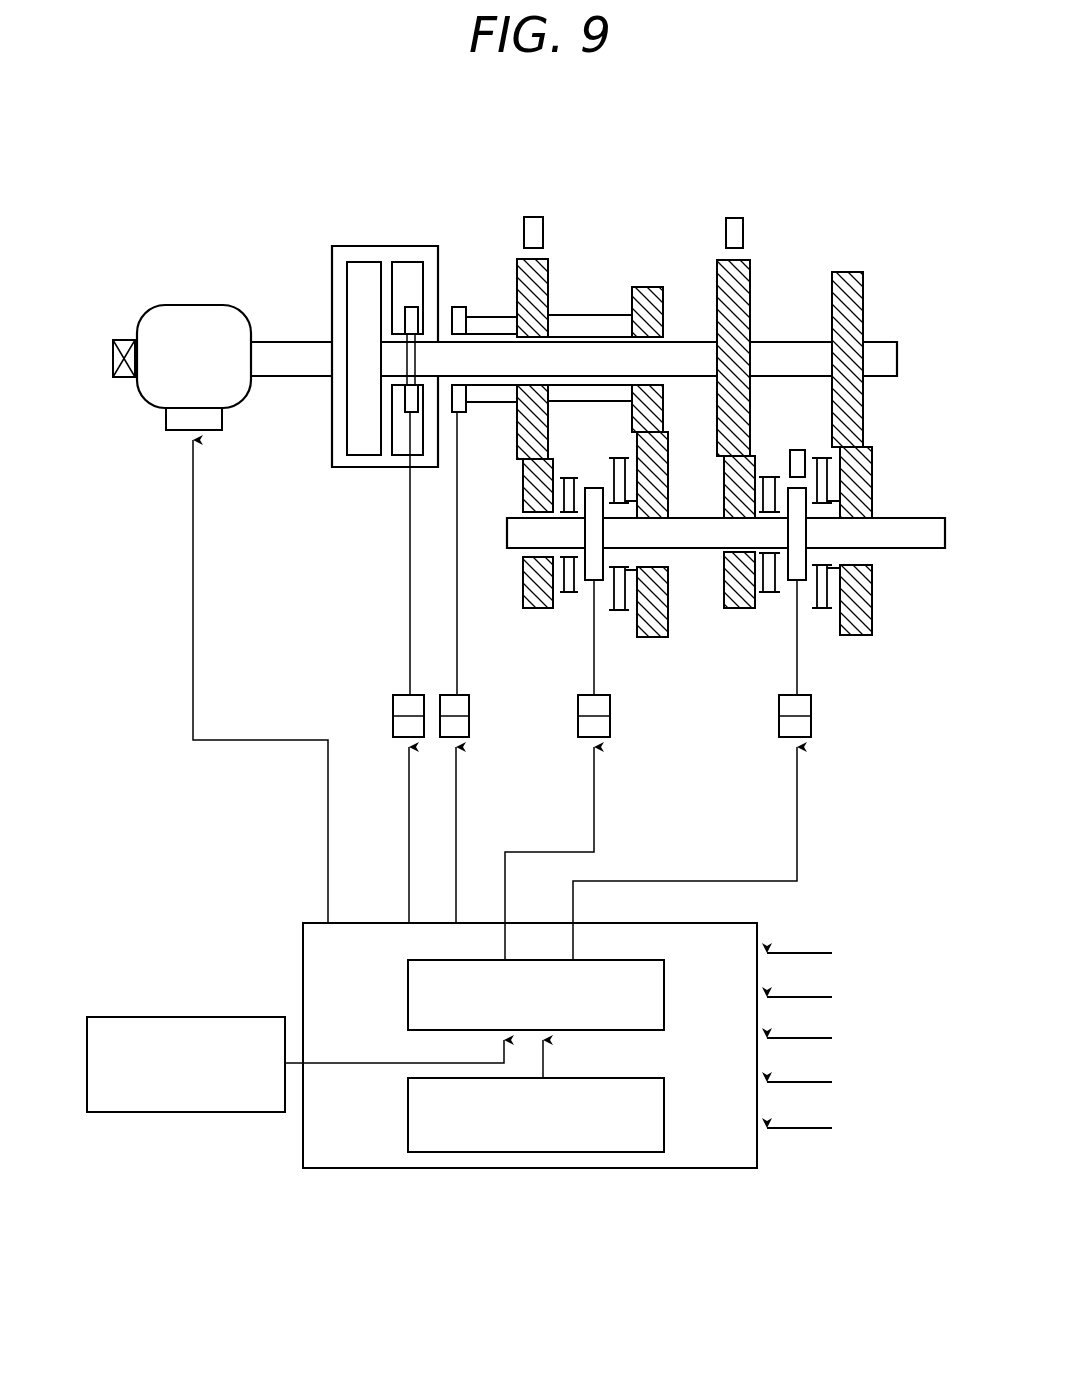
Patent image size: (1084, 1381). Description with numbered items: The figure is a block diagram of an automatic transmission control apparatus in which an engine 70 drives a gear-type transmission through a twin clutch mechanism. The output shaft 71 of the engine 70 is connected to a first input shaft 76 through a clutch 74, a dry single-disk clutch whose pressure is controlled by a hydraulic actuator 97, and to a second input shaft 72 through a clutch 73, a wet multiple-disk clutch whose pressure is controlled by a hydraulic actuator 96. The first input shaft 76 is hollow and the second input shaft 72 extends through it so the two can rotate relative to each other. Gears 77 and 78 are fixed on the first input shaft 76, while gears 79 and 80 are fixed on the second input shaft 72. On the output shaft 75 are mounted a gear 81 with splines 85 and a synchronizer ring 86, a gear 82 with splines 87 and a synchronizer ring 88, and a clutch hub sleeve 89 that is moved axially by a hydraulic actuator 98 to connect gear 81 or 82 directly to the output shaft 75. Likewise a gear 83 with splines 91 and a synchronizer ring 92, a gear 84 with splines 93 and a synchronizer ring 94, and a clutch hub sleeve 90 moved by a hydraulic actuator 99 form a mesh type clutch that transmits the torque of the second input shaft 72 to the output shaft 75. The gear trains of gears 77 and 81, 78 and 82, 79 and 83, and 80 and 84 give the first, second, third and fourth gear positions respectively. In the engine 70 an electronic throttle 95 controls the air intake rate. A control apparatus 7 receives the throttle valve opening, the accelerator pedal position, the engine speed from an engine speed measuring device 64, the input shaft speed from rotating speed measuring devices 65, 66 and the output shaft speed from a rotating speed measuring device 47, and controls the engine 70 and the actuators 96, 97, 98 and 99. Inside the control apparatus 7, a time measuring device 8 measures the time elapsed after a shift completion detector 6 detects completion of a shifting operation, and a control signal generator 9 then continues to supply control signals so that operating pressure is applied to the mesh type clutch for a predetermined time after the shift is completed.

The shift completion detector 6 is at (200, 1017).
The control apparatus 7 is at (706, 1168).
The time measuring device 8 is at (664, 1115).
The control signal generator 9 is at (664, 995).
The rotating speed measuring device 47 is at (797, 450).
The engine speed measuring device 64 is at (120, 378).
The rotating speed measuring device 65 is at (533, 217).
The rotating speed measuring device 66 is at (735, 218).
The engine 70 is at (200, 305).
The output shaft 71 is at (338, 262).
The second input shaft 72 is at (880, 360).
The clutch 73 is at (412, 307).
The clutch 74 is at (458, 307).
The output shaft 75 is at (915, 518).
The first input shaft 76 is at (595, 315).
The gear 77 is at (549, 266).
The gear 78 is at (646, 287).
The gear 79 is at (750, 276).
The gear 80 is at (863, 290).
The gear 81 is at (533, 609).
The gear 82 is at (655, 638).
The gear 83 is at (735, 609).
The gear 84 is at (856, 636).
The splines 85 is at (568, 593).
The synchronizer ring 86 is at (569, 478).
The splines 87 is at (618, 458).
The synchronizer ring 88 is at (618, 611).
The clutch hub sleeve 89 is at (592, 488).
The clutch hub sleeve 90 is at (788, 530).
The splines 91 is at (770, 593).
The synchronizer ring 92 is at (769, 477).
The splines 93 is at (822, 458).
The synchronizer ring 94 is at (822, 609).
The electronic throttle 95 is at (208, 431).
The hydraulic actuator 96 is at (393, 725).
The hydraulic actuator 97 is at (469, 725).
The hydraulic actuator 98 is at (610, 725).
The hydraulic actuator 99 is at (811, 725).